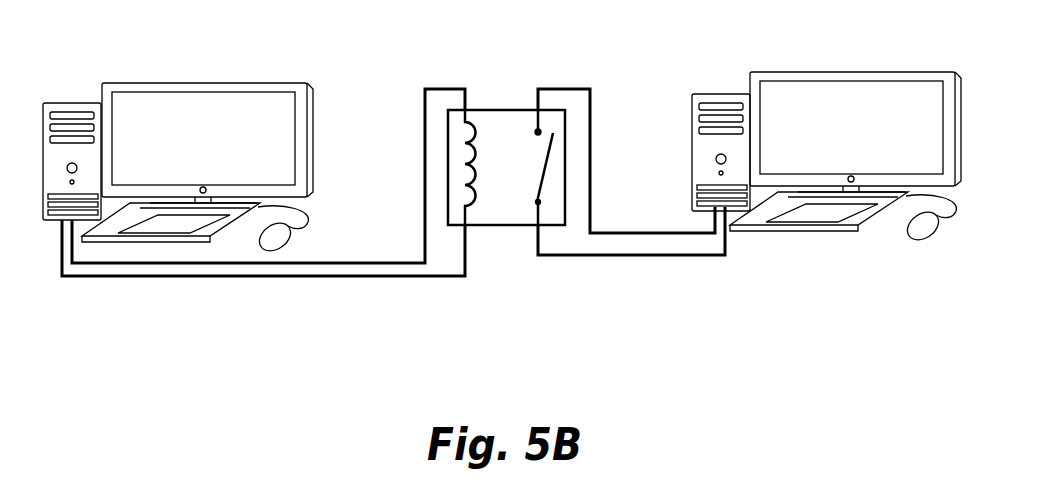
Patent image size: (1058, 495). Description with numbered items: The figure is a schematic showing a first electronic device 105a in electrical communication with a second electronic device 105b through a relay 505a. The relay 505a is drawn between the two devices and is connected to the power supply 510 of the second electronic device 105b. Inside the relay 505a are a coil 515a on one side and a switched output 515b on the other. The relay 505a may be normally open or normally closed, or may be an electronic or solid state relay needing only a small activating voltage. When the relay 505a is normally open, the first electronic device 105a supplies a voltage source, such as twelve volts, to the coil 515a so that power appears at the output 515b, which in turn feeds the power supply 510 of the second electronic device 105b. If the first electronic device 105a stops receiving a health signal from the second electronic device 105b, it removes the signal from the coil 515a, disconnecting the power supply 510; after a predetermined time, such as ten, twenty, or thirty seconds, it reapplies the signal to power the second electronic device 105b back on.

The first electronic device 105a is at (193, 83).
The second electronic device 105b is at (817, 232).
The relay 505a is at (509, 284).
The power supply 510 is at (697, 187).
The coil 515a is at (467, 157).
The output 515b is at (537, 128).